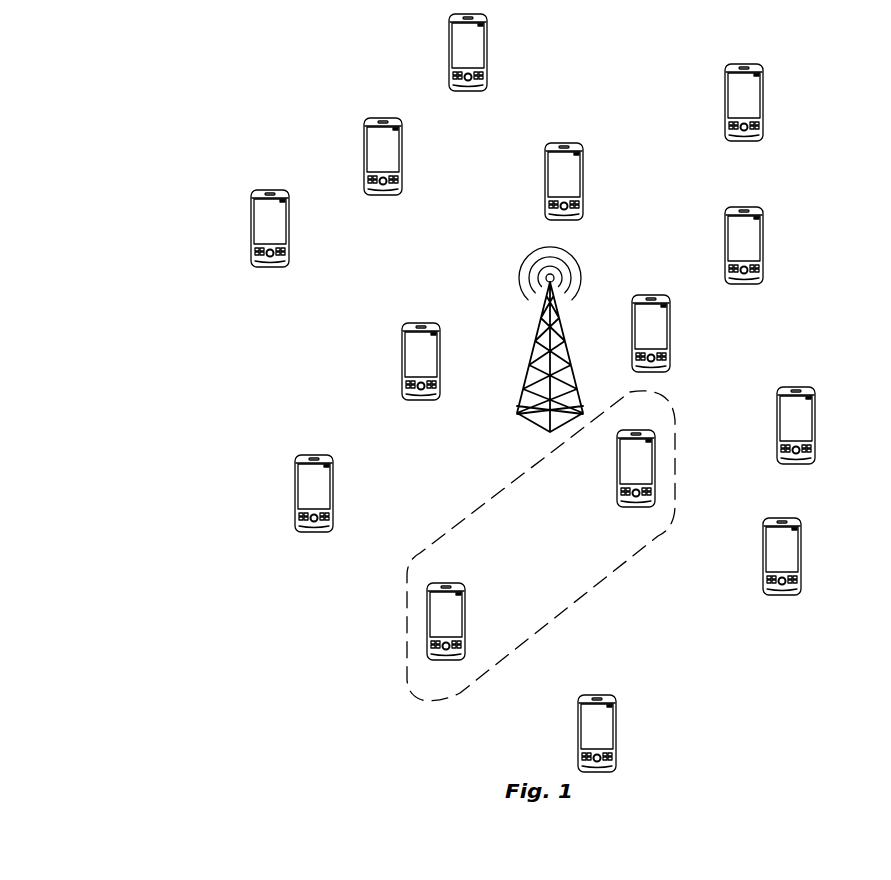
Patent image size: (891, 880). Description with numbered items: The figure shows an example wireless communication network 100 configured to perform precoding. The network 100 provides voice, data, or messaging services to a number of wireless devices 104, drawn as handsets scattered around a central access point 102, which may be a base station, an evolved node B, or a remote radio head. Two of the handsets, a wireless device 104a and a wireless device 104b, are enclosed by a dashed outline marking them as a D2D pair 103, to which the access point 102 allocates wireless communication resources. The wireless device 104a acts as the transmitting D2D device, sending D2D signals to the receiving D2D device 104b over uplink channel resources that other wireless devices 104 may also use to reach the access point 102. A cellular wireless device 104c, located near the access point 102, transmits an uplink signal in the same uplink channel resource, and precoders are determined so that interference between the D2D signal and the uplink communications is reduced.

The wireless communication network 100 is at (131, 71).
The access point 102 is at (530, 360).
The D2D pair 103 is at (651, 539).
The wireless devices 104 is at (449, 50).
The transmitting D2D device 104a is at (655, 464).
The receiving D2D device 104b is at (427, 620).
The cellular wireless device 104c is at (670, 338).